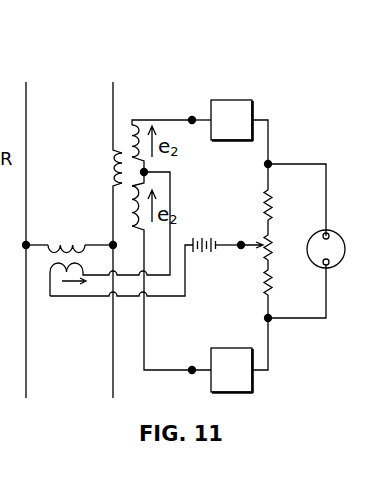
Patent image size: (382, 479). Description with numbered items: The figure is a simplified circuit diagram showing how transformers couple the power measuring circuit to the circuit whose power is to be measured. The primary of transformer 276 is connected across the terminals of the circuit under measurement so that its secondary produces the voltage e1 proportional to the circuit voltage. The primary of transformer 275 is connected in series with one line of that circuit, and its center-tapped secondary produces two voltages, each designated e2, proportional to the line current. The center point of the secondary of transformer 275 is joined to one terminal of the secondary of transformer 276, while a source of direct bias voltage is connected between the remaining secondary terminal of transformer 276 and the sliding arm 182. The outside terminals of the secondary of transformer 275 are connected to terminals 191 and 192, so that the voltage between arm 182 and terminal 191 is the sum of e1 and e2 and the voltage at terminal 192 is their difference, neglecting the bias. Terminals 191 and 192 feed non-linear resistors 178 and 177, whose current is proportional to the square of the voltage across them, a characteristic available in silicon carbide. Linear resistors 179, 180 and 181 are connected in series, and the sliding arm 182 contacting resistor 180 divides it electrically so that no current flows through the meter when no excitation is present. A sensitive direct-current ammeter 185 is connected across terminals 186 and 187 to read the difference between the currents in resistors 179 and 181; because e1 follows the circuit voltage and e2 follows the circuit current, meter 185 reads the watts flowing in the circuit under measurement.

The transformer 275 is at (112, 167).
The transformer 276 is at (53, 258).
The terminal 191 is at (190, 117).
The non-linear resistor 178 is at (233, 100).
The terminal 187 is at (270, 163).
The linear resistor 179 is at (265, 206).
The linear resistor 180 is at (271, 248).
The D.-C. ammeter 185 is at (329, 234).
The sliding arm 182 is at (252, 251).
The linear resistor 181 is at (265, 292).
The terminal 186 is at (271, 321).
The terminal 192 is at (191, 373).
The non-linear resistor 177 is at (253, 380).